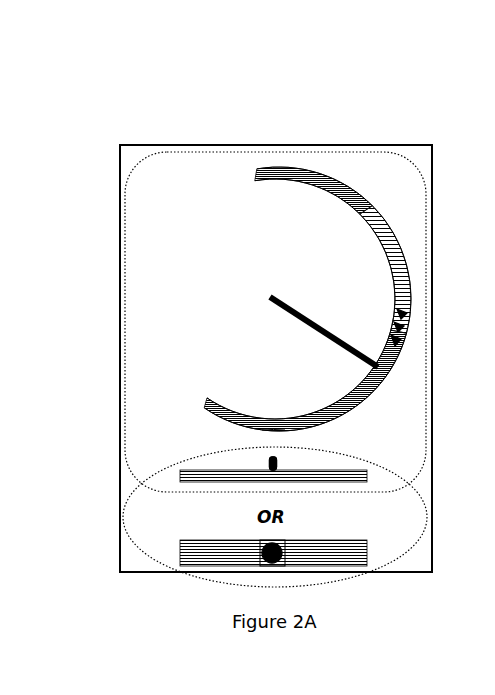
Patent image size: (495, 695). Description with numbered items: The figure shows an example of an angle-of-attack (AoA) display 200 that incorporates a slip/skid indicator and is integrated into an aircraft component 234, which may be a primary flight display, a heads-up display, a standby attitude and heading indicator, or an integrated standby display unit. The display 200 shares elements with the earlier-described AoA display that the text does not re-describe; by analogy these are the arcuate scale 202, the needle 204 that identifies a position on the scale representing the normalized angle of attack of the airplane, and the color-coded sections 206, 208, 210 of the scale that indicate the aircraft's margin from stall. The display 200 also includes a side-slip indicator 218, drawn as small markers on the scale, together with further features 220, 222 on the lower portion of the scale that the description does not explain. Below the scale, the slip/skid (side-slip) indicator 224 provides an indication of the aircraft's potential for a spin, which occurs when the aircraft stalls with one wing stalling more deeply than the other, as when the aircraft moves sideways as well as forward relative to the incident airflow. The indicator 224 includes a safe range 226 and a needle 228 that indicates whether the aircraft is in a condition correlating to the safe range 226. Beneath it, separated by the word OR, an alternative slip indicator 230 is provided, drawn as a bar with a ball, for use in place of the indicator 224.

The AoA display 200 is at (120, 145).
The first arc segment 202 is at (295, 171).
The bar element 204 is at (348, 341).
The lower arc segment 206 is at (307, 432).
The arc outer edge 208 is at (394, 238).
The light arc segment 210 is at (352, 194).
The side-slip indicator 218 is at (410, 328).
The arc inner edge 220 is at (343, 403).
The arc bottom point 222 is at (273, 433).
The slip/skid indicator 224 is at (182, 481).
The safe range 226 is at (271, 470).
The needle 228 is at (268, 467).
The slip indicator 230 is at (236, 565).
The aircraft component 234 is at (258, 145).